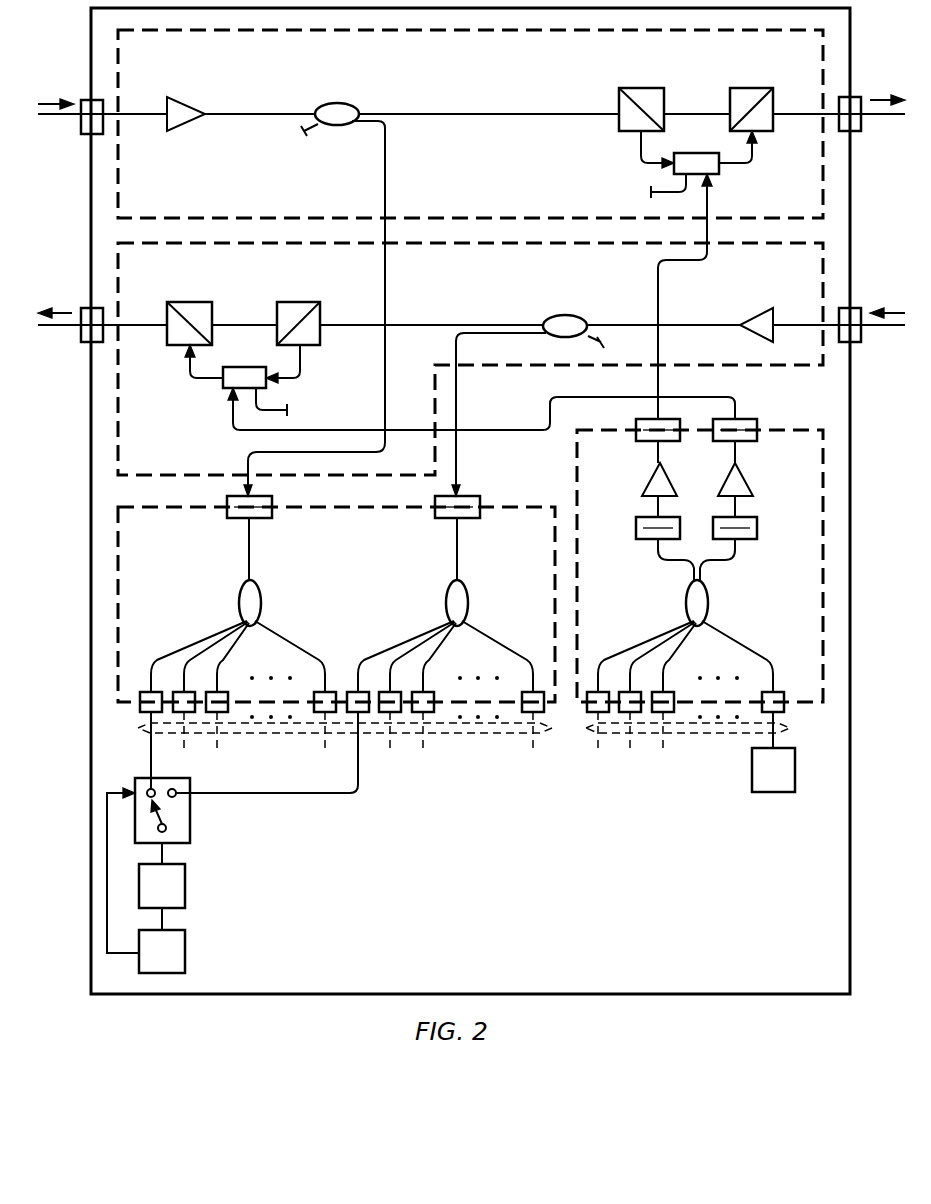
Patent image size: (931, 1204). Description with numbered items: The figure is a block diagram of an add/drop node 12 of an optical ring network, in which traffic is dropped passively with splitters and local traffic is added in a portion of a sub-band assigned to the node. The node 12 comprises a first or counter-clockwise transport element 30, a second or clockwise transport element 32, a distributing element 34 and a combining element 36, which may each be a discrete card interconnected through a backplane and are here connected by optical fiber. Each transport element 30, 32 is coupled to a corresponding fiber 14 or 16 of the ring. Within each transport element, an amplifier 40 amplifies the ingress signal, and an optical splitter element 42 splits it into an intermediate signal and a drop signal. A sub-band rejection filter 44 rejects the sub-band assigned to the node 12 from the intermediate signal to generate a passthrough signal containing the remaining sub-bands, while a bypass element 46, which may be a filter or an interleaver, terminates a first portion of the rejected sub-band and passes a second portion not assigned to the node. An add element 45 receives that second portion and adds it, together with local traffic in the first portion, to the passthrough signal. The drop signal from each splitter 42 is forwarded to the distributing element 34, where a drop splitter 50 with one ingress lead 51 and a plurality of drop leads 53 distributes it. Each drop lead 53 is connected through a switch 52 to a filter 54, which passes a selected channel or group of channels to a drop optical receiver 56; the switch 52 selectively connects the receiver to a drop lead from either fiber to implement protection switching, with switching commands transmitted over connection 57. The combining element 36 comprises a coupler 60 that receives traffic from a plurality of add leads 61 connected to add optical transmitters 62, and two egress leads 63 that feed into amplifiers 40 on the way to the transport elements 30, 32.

The node 12 is at (86, 657).
The fiber 14 is at (75, 118).
The fiber 16 is at (75, 328).
The first transport element 30 is at (487, 86).
The second transport element 32 is at (487, 296).
The distributing element 34 is at (367, 601).
The combining element 36 is at (570, 470).
The amplifier 40 is at (194, 103).
The optical splitter element 42 is at (337, 103).
The sub-band rejection filter 44 is at (640, 88).
The add element 45 is at (752, 88).
The bypass element 46 is at (719, 172).
The drop splitter 50 is at (239, 605).
The optical fiber ingress lead 51 is at (249, 550).
The switch 52 is at (192, 810).
The optical fiber drop lead 53 is at (545, 738).
The filter 54 is at (185, 885).
The drop optical receiver 56 is at (185, 950).
The connection 57 is at (112, 790).
The coupler 60 is at (710, 605).
The optical fiber add lead 61 is at (790, 728).
The add optical transmitter 62 is at (752, 776).
The optical fiber egress lead 63 is at (655, 541).